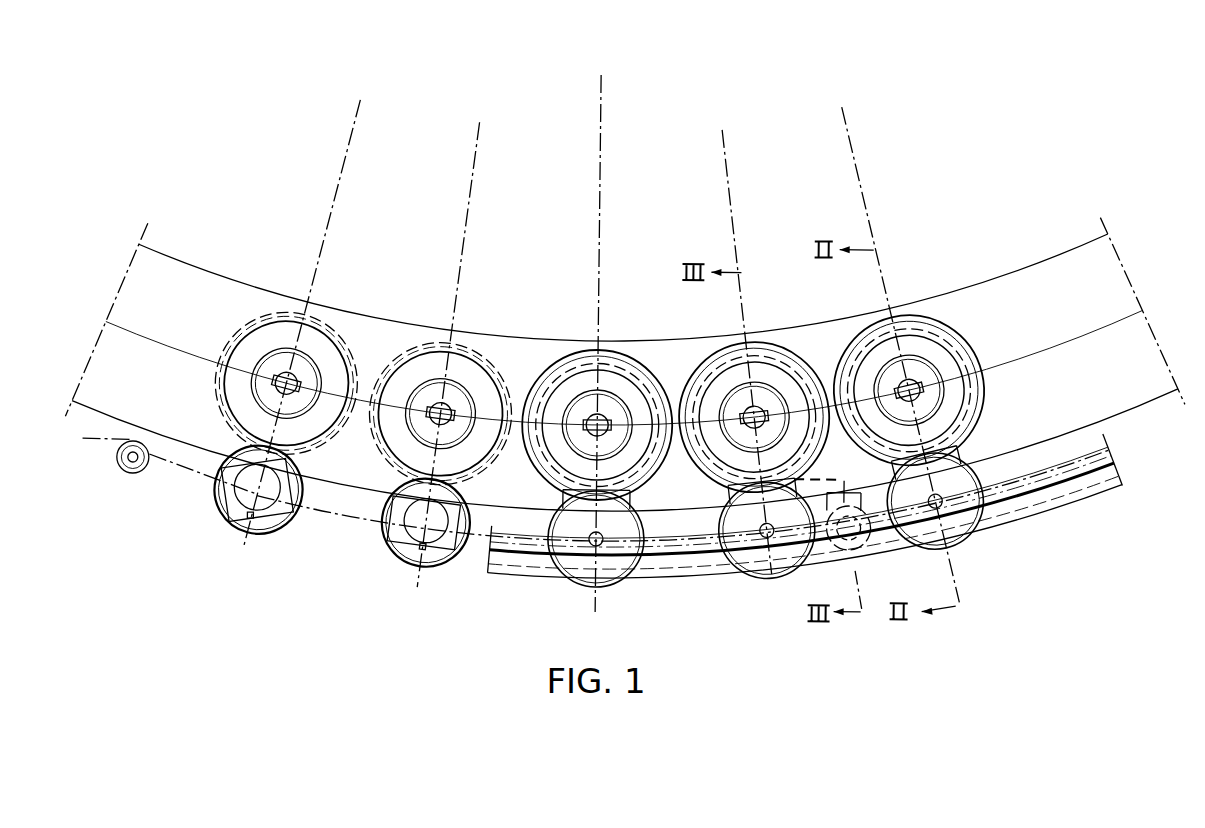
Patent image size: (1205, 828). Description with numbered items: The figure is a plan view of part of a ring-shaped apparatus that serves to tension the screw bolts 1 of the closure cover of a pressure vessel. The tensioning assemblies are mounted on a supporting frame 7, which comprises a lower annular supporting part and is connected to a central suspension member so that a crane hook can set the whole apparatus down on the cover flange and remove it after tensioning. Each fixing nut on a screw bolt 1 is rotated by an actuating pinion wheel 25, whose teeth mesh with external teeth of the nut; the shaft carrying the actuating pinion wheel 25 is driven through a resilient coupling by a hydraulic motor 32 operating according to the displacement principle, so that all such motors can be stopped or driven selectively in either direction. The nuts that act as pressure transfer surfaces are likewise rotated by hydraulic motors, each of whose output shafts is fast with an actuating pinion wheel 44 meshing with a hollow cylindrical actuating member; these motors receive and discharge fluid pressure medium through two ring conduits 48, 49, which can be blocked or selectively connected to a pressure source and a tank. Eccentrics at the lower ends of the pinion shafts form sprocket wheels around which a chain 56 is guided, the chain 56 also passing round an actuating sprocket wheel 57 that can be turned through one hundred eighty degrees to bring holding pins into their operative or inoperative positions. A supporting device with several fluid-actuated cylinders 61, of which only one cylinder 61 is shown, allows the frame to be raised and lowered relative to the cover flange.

The screw bolts 1 is at (307, 363).
The supporting frame 7 is at (1040, 272).
The actuating pinion wheel 25 is at (440, 568).
The hydraulic motor 32 is at (413, 556).
The actuating pinion wheel 44 is at (607, 585).
The ring conduit 48 is at (1027, 506).
The ring conduit 49 is at (1100, 465).
The chain 56 is at (182, 472).
The actuating sprocket wheel 57 is at (128, 479).
The cylinder 61 is at (872, 540).